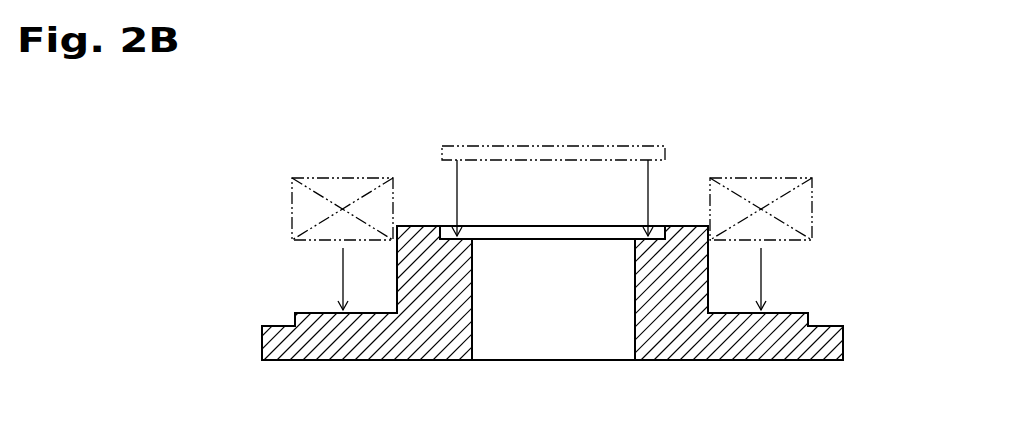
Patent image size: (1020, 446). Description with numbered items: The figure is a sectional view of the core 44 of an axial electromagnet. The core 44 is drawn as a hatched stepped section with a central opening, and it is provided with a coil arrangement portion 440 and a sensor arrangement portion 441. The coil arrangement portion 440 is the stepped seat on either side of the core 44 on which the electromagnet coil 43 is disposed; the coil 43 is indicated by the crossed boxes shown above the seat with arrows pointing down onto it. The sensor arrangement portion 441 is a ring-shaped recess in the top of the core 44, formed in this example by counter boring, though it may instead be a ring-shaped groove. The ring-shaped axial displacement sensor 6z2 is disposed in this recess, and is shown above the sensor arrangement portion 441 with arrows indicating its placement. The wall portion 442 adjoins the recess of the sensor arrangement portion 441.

The core 44 is at (659, 343).
The coil arrangement portion 440 is at (327, 313).
The sensor arrangement portion 441 is at (450, 237).
The side wall portion 442 is at (685, 227).
The axial displacement sensor 6z2 is at (665, 148).
The electromagnet coil 43 is at (305, 178).